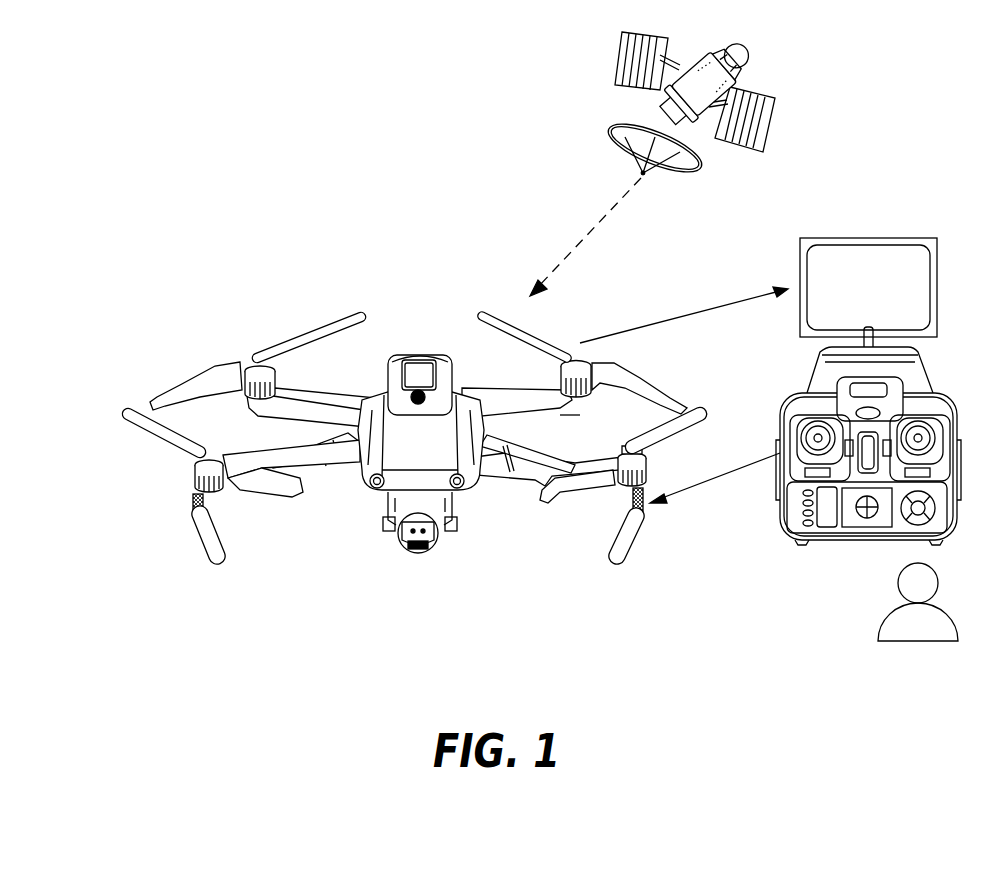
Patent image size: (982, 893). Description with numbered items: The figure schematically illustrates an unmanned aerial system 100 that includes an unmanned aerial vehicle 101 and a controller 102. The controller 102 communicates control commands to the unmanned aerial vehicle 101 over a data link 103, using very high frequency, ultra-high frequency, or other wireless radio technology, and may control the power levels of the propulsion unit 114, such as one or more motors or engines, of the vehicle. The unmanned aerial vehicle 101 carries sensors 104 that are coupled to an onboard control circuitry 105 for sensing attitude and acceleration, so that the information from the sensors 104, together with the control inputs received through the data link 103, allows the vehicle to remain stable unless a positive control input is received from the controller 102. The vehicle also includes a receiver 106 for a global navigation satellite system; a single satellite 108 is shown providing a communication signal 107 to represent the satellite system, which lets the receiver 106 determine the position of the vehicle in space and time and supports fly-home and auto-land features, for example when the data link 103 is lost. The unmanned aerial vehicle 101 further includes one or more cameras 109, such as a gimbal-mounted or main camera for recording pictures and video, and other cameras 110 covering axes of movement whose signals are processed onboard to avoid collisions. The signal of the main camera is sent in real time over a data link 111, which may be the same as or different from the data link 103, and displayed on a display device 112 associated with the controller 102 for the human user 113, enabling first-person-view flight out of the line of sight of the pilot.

The unmanned aerial system 100 is at (212, 154).
The unmanned aerial vehicle 101 is at (212, 603).
The controller 102 is at (815, 540).
The data link 103 is at (700, 480).
The sensors 104 is at (367, 486).
The onboard control circuitry 105 is at (445, 355).
The receiver 106 is at (387, 358).
The communication signal 107 is at (617, 200).
The satellite 108 is at (780, 98).
The cameras 109 is at (392, 546).
The other cameras 110 is at (193, 512).
The data link 111 is at (683, 307).
The display device 112 is at (879, 253).
The user 113 is at (894, 624).
The propulsion unit 114 is at (190, 490).